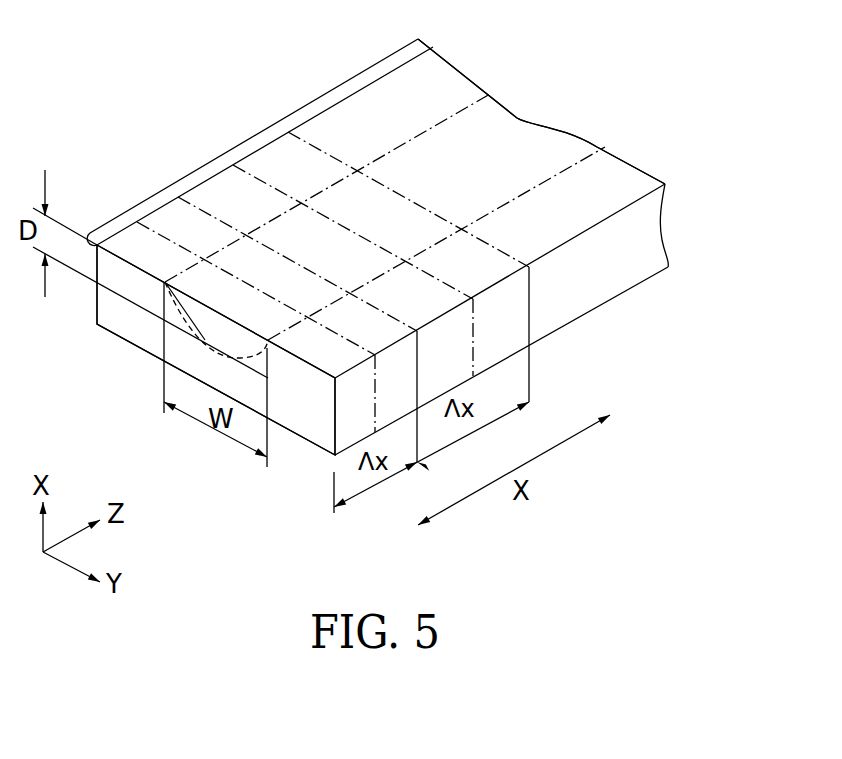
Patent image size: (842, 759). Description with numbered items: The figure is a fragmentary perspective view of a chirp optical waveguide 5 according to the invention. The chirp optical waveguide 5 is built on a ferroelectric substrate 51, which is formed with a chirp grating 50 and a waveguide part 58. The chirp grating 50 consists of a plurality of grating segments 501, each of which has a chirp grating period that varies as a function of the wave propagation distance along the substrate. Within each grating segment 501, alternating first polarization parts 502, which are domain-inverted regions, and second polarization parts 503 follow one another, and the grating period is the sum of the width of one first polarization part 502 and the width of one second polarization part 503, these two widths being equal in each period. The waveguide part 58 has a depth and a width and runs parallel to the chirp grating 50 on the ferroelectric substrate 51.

The chirp optical waveguide 5 is at (388, 258).
The chirp grating 50 is at (231, 72).
The grating segment 501 is at (272, 127).
The first polarization part 502 is at (323, 358).
The second polarization part 503 is at (388, 335).
The ferroelectric substrate 51 is at (133, 330).
The waveguide part 58 is at (517, 148).